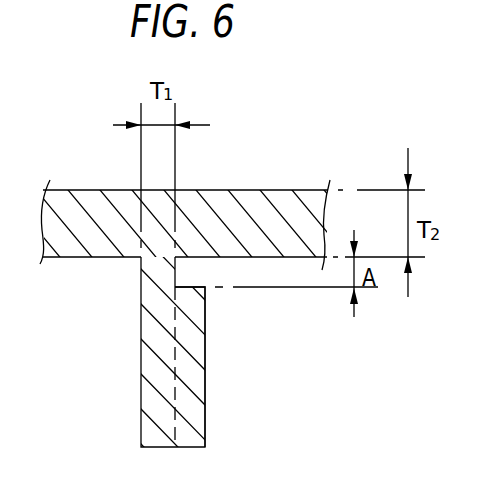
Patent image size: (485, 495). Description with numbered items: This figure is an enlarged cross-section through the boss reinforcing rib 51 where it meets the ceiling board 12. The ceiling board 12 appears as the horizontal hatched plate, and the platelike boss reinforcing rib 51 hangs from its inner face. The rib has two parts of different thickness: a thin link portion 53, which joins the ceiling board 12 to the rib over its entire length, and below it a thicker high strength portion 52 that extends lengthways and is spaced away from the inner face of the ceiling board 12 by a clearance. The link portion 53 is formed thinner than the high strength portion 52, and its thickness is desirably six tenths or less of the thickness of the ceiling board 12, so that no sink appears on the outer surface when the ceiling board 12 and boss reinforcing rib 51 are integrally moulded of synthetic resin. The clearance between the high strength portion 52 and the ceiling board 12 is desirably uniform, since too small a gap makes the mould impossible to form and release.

The ceiling board 12 is at (258, 190).
The boss reinforcing rib 51 is at (141, 358).
The high strength portion 52 is at (208, 378).
The link portion 53 is at (147, 285).